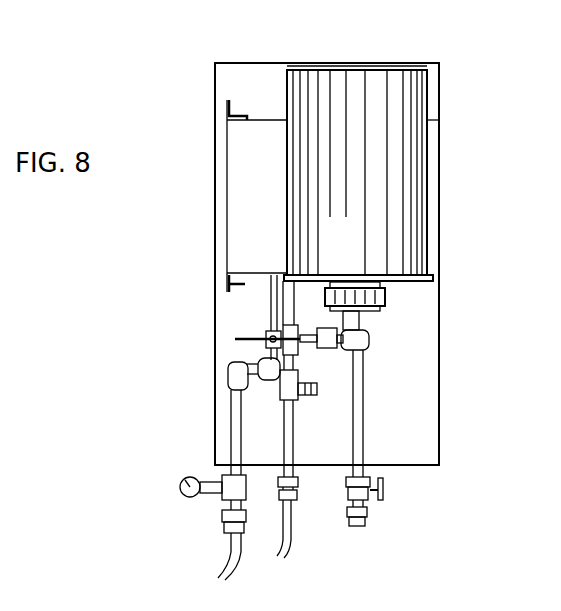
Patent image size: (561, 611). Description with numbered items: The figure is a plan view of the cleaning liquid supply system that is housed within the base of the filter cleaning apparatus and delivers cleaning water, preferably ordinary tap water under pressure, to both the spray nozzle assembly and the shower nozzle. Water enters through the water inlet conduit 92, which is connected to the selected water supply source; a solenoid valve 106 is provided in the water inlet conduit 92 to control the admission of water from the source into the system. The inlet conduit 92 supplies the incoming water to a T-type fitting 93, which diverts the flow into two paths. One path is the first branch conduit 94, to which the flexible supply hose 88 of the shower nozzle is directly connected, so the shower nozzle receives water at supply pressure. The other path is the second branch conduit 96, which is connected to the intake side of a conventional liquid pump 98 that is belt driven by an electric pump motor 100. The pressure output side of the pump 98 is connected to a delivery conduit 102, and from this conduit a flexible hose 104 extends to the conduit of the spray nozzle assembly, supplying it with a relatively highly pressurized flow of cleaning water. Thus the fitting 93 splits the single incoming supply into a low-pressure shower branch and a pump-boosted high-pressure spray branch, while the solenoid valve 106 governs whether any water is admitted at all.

The flexible supply hose 88 is at (285, 556).
The water inlet conduit 92 is at (357, 452).
The T-type fitting 93 is at (303, 326).
The first branch conduit 94 is at (300, 370).
The second branch conduit 96 is at (297, 290).
The liquid pump 98 is at (247, 188).
The electric pump motor 100 is at (305, 98).
The delivery conduit 102 is at (273, 300).
The flexible hose 104 is at (215, 570).
The solenoid valve 106 is at (330, 348).